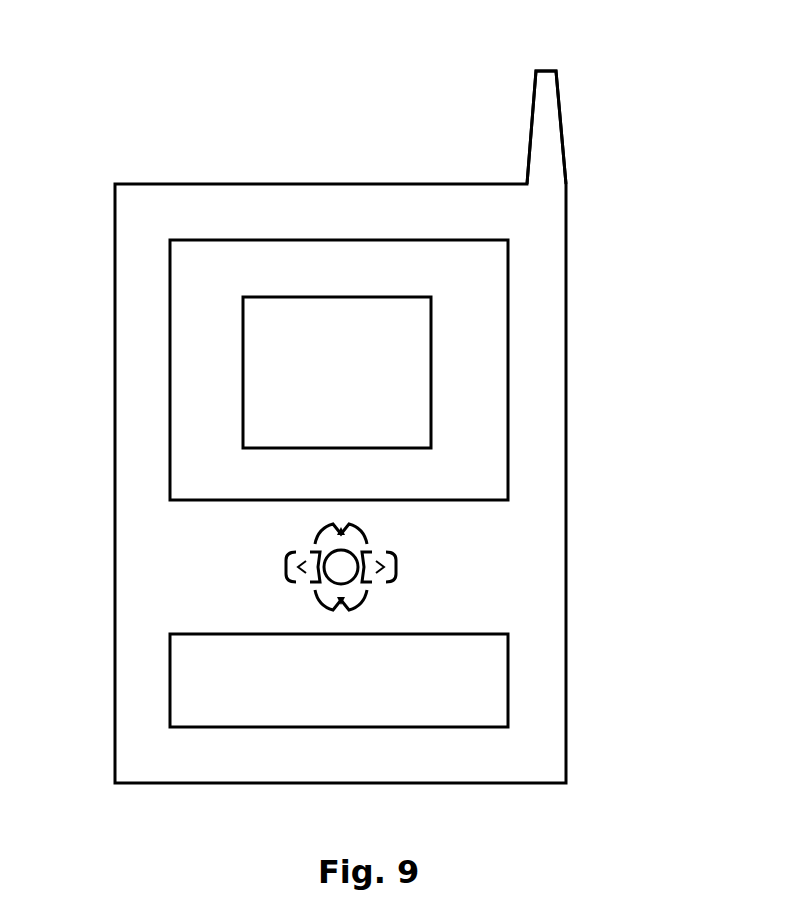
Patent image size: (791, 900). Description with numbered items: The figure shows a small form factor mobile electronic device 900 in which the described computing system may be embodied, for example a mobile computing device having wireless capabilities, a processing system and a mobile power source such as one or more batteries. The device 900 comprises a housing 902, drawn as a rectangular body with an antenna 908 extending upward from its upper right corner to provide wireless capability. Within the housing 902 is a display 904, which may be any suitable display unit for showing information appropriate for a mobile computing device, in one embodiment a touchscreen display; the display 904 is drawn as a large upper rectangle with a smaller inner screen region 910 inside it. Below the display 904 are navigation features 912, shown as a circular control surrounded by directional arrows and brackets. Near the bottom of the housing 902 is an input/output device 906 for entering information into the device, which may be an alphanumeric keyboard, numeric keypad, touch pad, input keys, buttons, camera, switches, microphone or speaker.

The small form factor device 900 is at (124, 74).
The housing 902 is at (566, 484).
The display 904 is at (508, 257).
The input/output (I/O) device 906 is at (508, 671).
The antenna 908 is at (531, 119).
The display screen 910 is at (431, 392).
The navigation features 912 is at (427, 556).